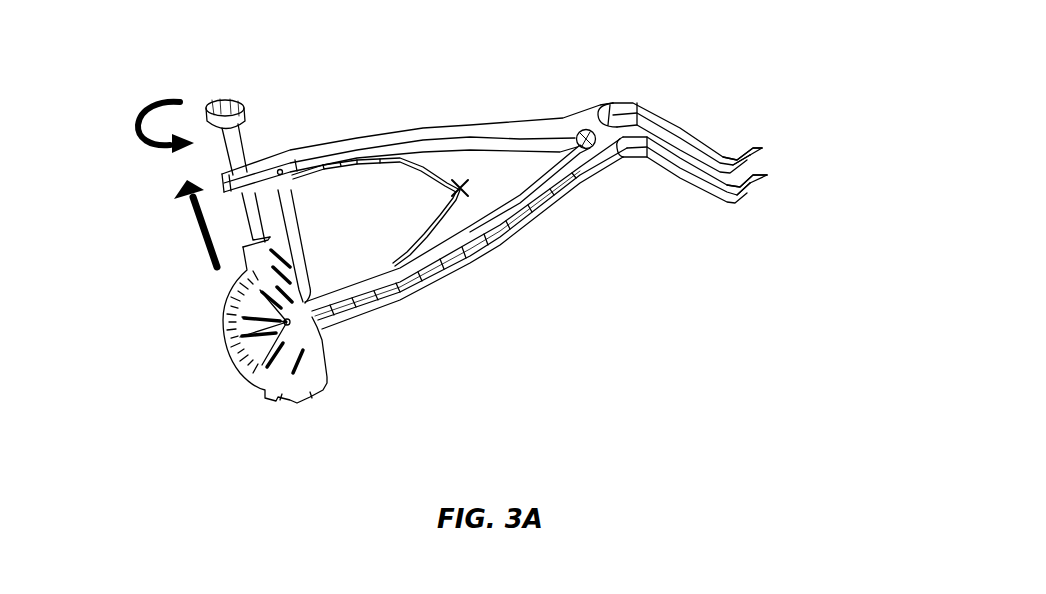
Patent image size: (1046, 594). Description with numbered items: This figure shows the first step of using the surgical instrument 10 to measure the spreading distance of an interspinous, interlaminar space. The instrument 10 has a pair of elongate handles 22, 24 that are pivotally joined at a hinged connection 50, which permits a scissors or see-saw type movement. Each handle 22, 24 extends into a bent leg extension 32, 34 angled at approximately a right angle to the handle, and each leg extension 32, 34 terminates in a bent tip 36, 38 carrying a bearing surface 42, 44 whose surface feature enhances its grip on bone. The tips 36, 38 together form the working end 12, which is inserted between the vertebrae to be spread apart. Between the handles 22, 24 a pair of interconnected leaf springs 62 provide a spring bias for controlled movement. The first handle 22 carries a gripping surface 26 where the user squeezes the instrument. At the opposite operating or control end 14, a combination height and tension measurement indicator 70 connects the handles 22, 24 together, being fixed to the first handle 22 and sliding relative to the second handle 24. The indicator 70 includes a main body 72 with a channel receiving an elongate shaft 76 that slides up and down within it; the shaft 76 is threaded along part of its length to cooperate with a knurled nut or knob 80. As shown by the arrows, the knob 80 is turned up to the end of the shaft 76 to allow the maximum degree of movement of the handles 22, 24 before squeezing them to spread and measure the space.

The surgical instrument 10 is at (641, 337).
The working end 12 is at (873, 133).
The operating or control end 14 is at (126, 354).
The first handle 22 is at (532, 215).
The second handle 24 is at (492, 123).
The gripping surface 26 is at (440, 272).
The leg extension 32 is at (687, 175).
The leg extension 34 is at (667, 122).
The tip 36 is at (768, 177).
The tip 38 is at (762, 150).
The bearing surface 42 is at (758, 183).
The bearing surface 44 is at (743, 148).
The hinged connection 50 is at (586, 128).
The leaf springs 62 is at (403, 162).
The combination height and tension measurement indicator 70 is at (236, 404).
The main body 72 is at (322, 362).
The elongate shaft 76 is at (242, 147).
The knurled nut or knob 80 is at (232, 102).